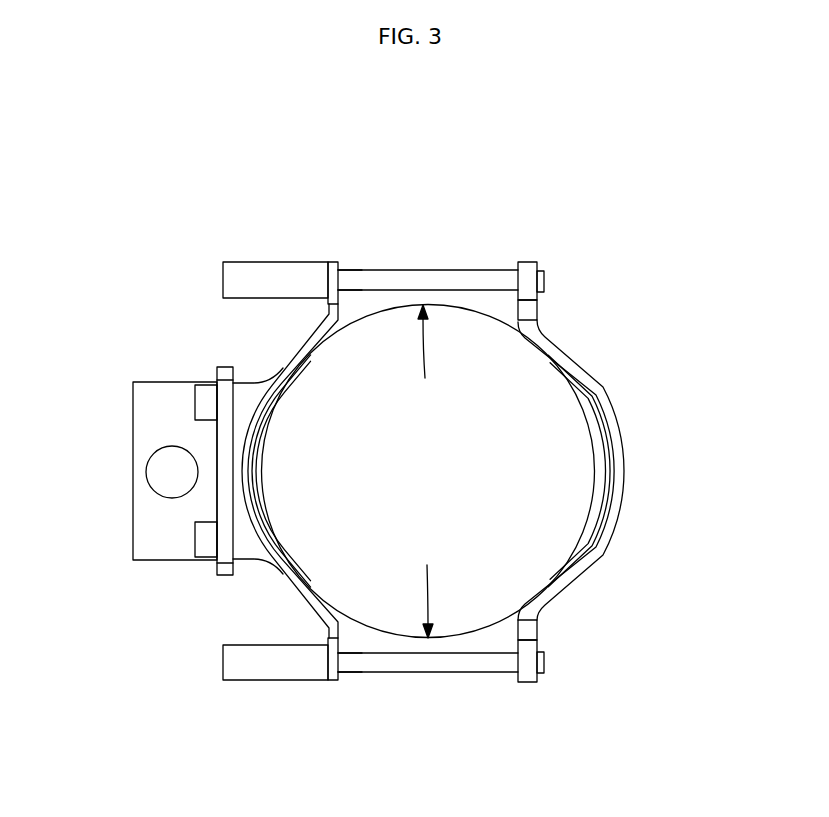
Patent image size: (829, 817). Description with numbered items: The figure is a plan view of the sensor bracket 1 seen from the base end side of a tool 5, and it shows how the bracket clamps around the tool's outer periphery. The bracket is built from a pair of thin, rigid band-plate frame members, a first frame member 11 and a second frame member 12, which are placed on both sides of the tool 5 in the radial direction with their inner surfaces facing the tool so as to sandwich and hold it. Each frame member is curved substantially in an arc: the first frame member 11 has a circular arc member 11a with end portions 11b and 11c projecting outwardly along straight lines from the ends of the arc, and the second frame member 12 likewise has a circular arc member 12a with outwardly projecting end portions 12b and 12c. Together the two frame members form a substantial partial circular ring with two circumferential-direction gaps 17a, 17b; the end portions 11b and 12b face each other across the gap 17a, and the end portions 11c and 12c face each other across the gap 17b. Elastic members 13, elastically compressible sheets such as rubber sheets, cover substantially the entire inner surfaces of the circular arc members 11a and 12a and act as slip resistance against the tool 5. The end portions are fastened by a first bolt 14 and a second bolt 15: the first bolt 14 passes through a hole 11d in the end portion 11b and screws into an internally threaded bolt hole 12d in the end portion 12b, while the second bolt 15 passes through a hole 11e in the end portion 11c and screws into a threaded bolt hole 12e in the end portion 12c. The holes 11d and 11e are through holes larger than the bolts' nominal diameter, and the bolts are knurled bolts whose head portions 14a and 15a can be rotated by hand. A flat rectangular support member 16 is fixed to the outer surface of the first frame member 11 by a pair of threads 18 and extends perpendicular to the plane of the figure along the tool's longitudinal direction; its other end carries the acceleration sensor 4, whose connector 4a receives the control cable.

The sensor bracket 1 is at (82, 382).
The acceleration sensor 4 is at (133, 522).
The connector 4a is at (168, 472).
The tool 5 is at (597, 488).
The first frame member 11 is at (245, 471).
The circular arc member 11a is at (282, 368).
The end portion 11b is at (329, 312).
The end portion 11c is at (329, 630).
The hole 11d is at (358, 268).
The hole 11e is at (358, 680).
The second frame member 12 is at (616, 480).
The circular arc member 12a is at (627, 462).
The end portion 12b is at (528, 313).
The end portion 12c is at (530, 628).
The bolt hole 12d is at (496, 268).
The bolt hole 12e is at (500, 683).
The elastic member 13 is at (252, 467).
The first bolt 14 is at (425, 268).
The head portion 14a is at (269, 268).
The second bolt 15 is at (420, 685).
The head portion 15a is at (265, 665).
The support member 16 is at (217, 437).
The circumferential-direction gap 17a is at (426, 354).
The circumferential-direction gap 17b is at (427, 589).
The threads 18 is at (195, 398).